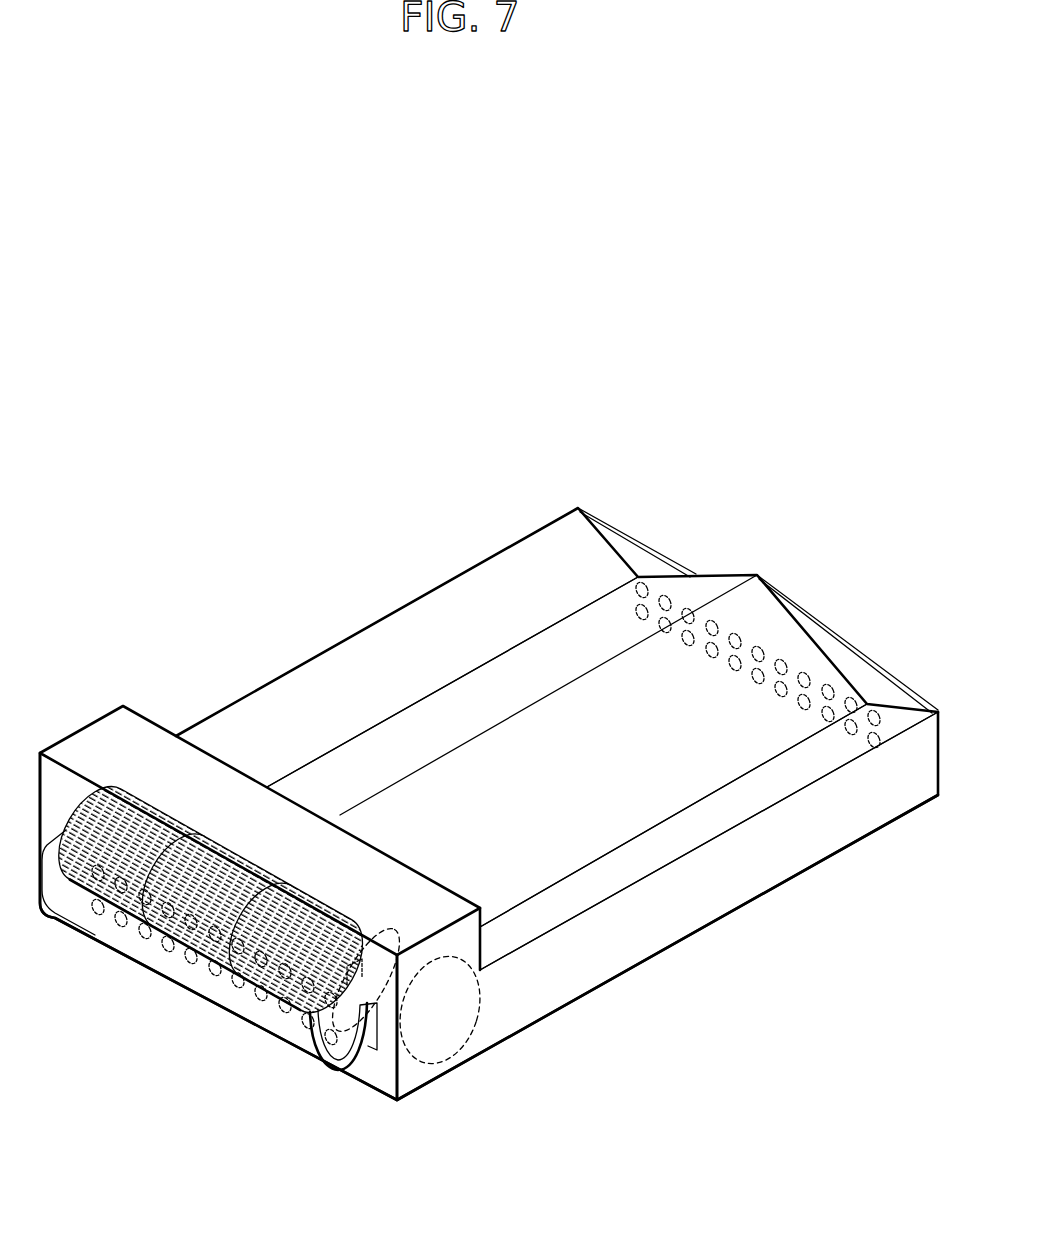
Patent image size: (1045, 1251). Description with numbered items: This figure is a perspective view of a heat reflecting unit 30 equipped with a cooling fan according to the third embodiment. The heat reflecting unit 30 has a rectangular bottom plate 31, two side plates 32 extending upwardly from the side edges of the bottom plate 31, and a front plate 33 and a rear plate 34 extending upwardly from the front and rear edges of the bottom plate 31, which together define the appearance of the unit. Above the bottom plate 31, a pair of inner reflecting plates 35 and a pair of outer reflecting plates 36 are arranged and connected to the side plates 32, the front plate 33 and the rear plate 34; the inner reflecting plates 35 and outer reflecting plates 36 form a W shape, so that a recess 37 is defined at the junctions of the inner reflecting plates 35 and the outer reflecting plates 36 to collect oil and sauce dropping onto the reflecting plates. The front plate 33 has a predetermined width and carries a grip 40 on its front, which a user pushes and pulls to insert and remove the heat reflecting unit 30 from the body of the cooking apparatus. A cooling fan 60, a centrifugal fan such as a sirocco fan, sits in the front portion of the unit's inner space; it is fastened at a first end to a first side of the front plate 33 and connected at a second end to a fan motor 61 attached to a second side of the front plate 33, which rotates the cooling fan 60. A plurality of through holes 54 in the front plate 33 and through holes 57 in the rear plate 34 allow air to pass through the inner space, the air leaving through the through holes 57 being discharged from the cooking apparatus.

The heat reflecting unit 30 is at (456, 563).
The bottom plate 31 is at (521, 1036).
The side plates 32 is at (603, 953).
The front plate 33 is at (363, 1066).
The rear plate 34 is at (632, 530).
The inner reflecting plates 35 is at (437, 720).
The outer reflecting plates 36 is at (232, 752).
The recess 37 is at (316, 759).
The grip 40 is at (206, 990).
The through holes 54 is at (309, 1025).
The through holes 57 is at (790, 673).
The cooling fan 60 is at (135, 860).
The fan motor 61 is at (428, 1052).